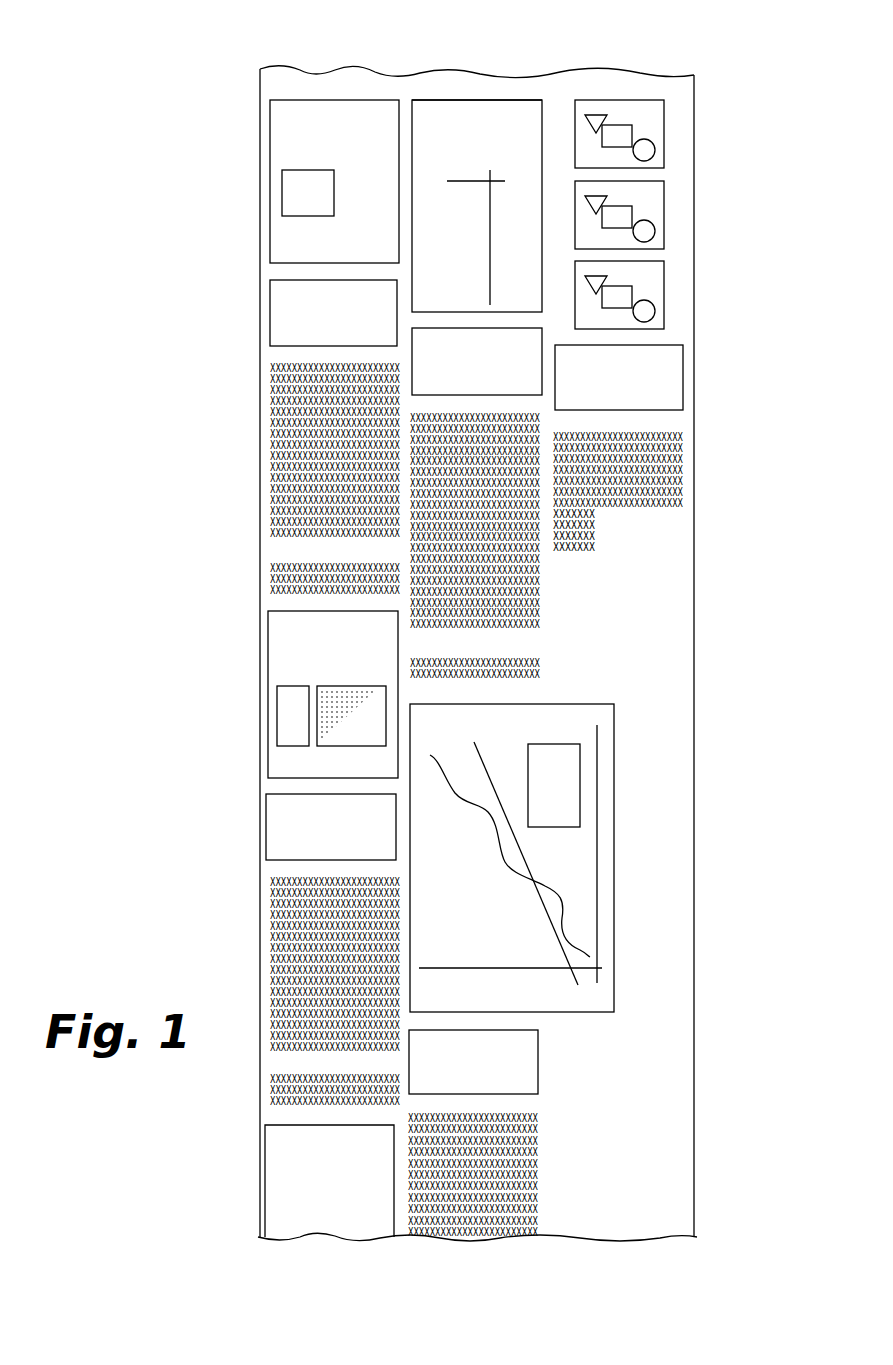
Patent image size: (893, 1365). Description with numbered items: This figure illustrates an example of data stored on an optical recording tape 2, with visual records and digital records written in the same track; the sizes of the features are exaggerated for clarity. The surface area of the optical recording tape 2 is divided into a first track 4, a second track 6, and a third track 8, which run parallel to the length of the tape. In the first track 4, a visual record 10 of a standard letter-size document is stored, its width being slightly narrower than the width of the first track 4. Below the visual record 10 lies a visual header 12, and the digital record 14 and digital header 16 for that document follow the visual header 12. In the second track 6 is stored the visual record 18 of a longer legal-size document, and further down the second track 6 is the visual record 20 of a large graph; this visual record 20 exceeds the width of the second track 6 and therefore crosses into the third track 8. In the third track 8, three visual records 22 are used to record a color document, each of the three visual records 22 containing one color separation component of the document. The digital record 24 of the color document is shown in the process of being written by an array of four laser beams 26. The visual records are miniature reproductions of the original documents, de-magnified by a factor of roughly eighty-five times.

The optical recording tape 2 is at (694, 1256).
The first track 4 is at (272, 48).
The second track 6 is at (413, 48).
The third track 8 is at (556, 48).
The visual record 10 is at (270, 133).
The visual header 12 is at (270, 283).
The digital record 14 is at (270, 378).
The digital header 16 is at (270, 503).
The visual record 18 is at (505, 100).
The visual record 20 is at (614, 806).
The visual records 22 is at (712, 105).
The digital record 24 is at (688, 439).
The laser beams 26 is at (604, 504).